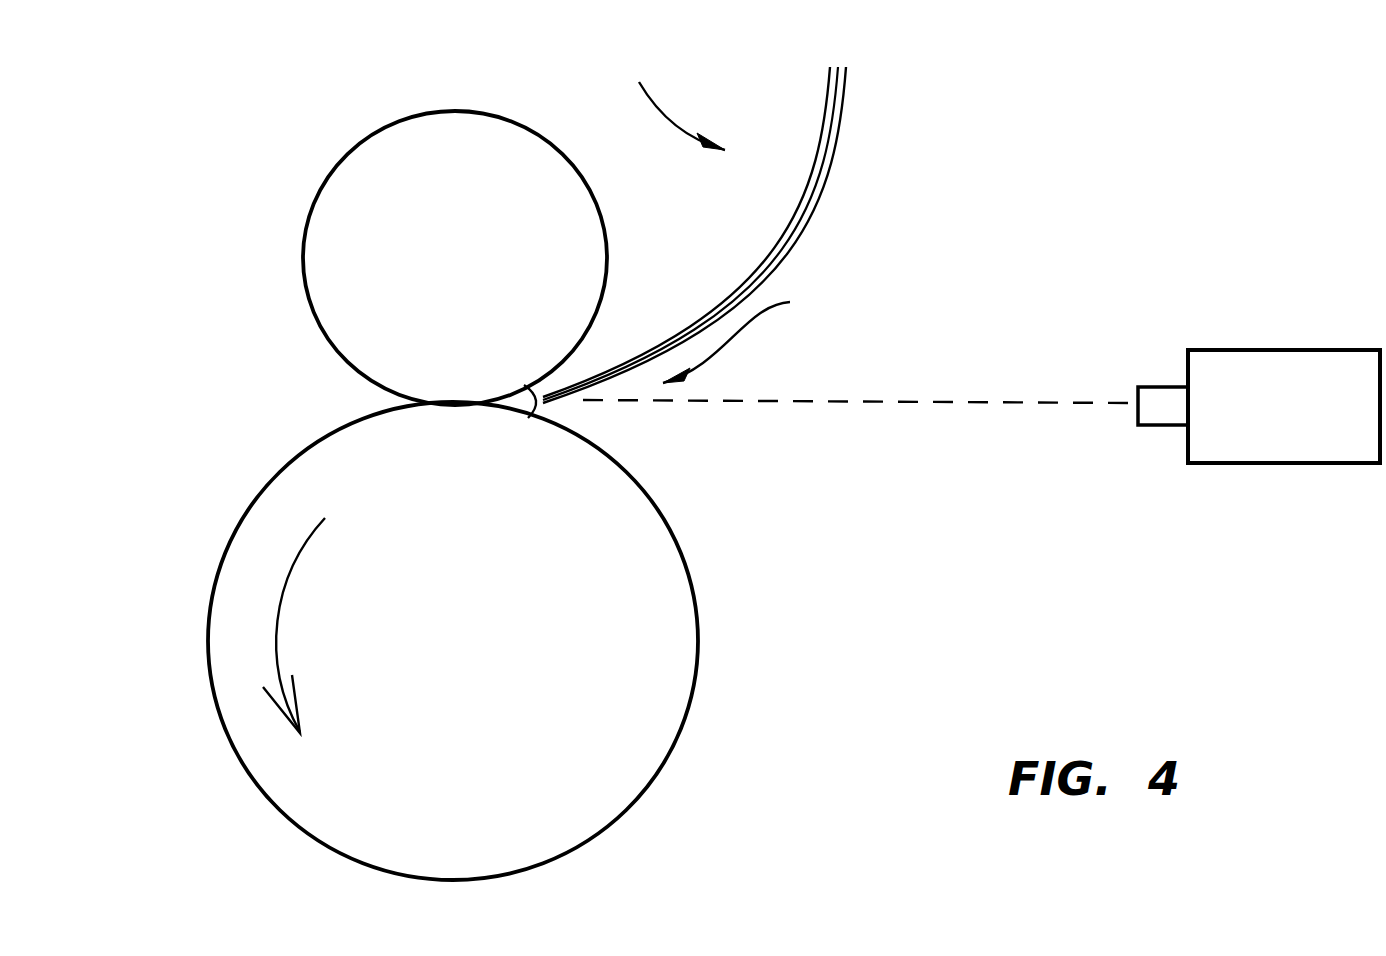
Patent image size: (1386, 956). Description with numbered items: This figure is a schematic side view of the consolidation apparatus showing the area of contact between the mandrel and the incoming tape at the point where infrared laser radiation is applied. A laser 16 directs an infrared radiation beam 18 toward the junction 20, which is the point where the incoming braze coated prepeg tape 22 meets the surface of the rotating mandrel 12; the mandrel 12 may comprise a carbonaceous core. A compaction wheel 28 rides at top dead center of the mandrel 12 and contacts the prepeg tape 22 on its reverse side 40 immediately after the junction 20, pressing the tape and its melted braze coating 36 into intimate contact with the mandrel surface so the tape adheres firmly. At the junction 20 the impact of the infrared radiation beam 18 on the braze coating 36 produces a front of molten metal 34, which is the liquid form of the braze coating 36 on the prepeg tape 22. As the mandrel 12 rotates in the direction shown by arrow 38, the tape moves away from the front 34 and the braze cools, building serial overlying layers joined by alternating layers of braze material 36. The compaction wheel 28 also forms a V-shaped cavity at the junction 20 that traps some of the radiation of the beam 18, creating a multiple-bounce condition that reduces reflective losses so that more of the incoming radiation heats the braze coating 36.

The mandrel 12 is at (322, 470).
The laser 16 is at (1328, 368).
The infrared radiation beam 18 is at (878, 403).
The junction 20 is at (749, 333).
The braze coated prepeg tape 22 is at (767, 240).
The compaction wheel 28 is at (354, 183).
The front of molten metal 34 is at (532, 406).
The braze coating 36 is at (807, 196).
The arrow 38 is at (273, 623).
The reverse side 40 is at (665, 97).